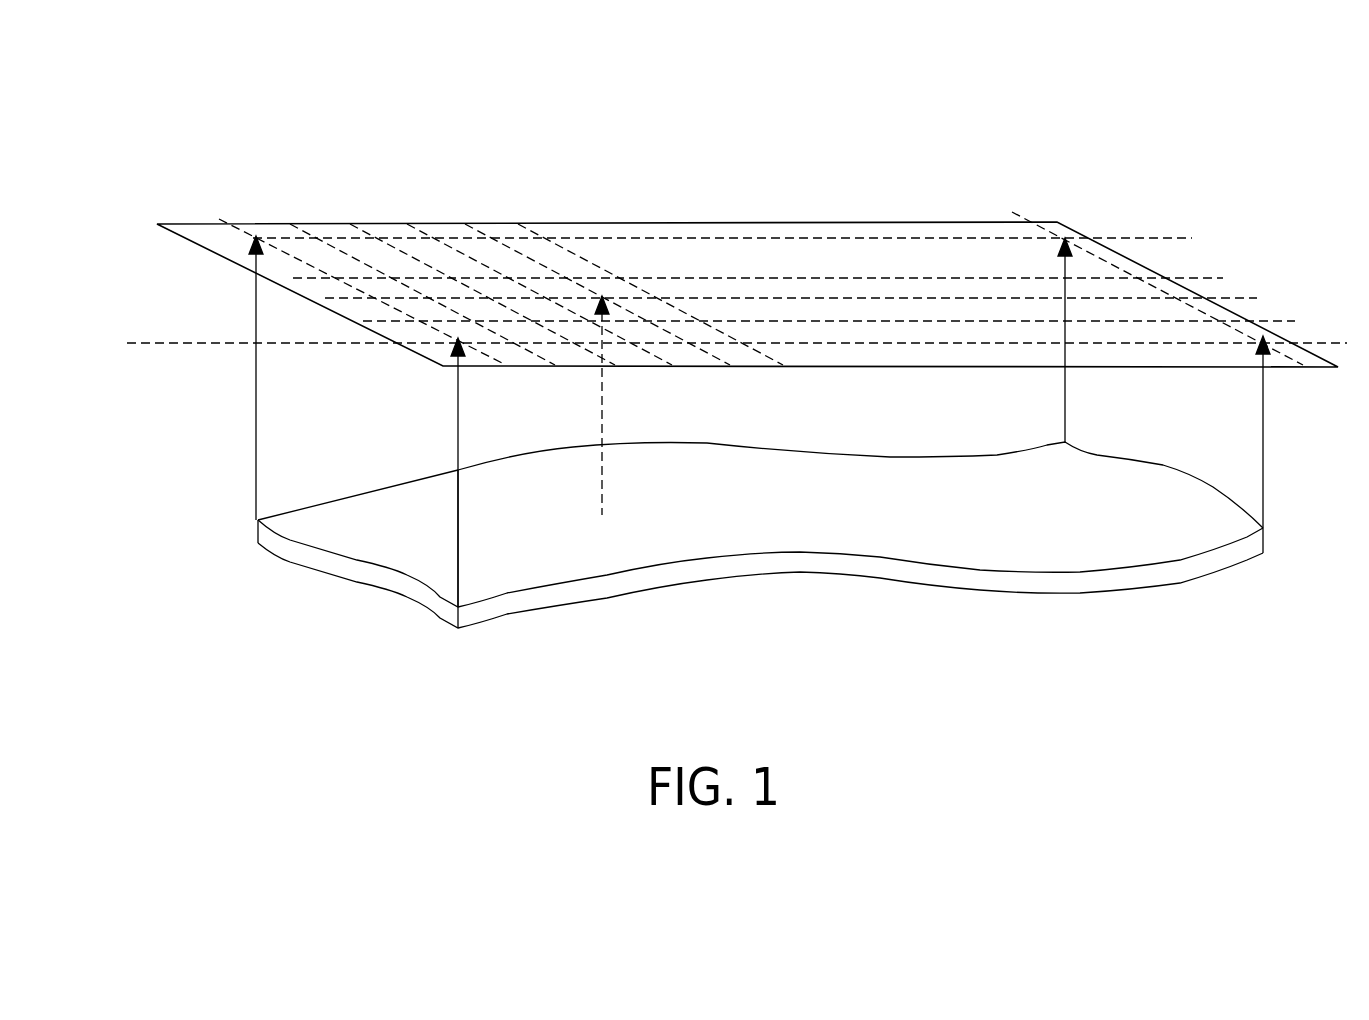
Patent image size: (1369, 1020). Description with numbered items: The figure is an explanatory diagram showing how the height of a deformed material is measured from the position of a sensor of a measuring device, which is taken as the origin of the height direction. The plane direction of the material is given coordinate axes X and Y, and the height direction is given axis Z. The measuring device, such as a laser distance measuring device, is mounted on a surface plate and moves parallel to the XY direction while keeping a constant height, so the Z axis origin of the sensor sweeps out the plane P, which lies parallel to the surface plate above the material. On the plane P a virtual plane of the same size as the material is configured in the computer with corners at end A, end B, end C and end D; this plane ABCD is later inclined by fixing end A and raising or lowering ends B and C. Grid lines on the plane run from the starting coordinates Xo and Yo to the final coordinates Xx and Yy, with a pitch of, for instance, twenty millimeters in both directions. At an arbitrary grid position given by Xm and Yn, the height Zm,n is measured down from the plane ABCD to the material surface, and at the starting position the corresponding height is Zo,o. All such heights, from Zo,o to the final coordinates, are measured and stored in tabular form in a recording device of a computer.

The plane P is at (747, 213).
The end A of plane ABCD A is at (431, 483).
The end B of plane ABCD B is at (1301, 432).
The end C of plane ABCD C is at (191, 347).
The end D of plane ABCD D is at (1082, 304).
The X0 coordinate Xo is at (350, 271).
The Xx final X coordinate Xx is at (1149, 271).
The Xm coordinate Xm is at (627, 317).
The Y0 coordinate Yo is at (690, 342).
The Yy final Y coordinate Yy is at (758, 223).
The Yn coordinate Yn is at (825, 293).
The height Zm,n is at (652, 405).
The height Z0,0 Zo,o is at (497, 538).